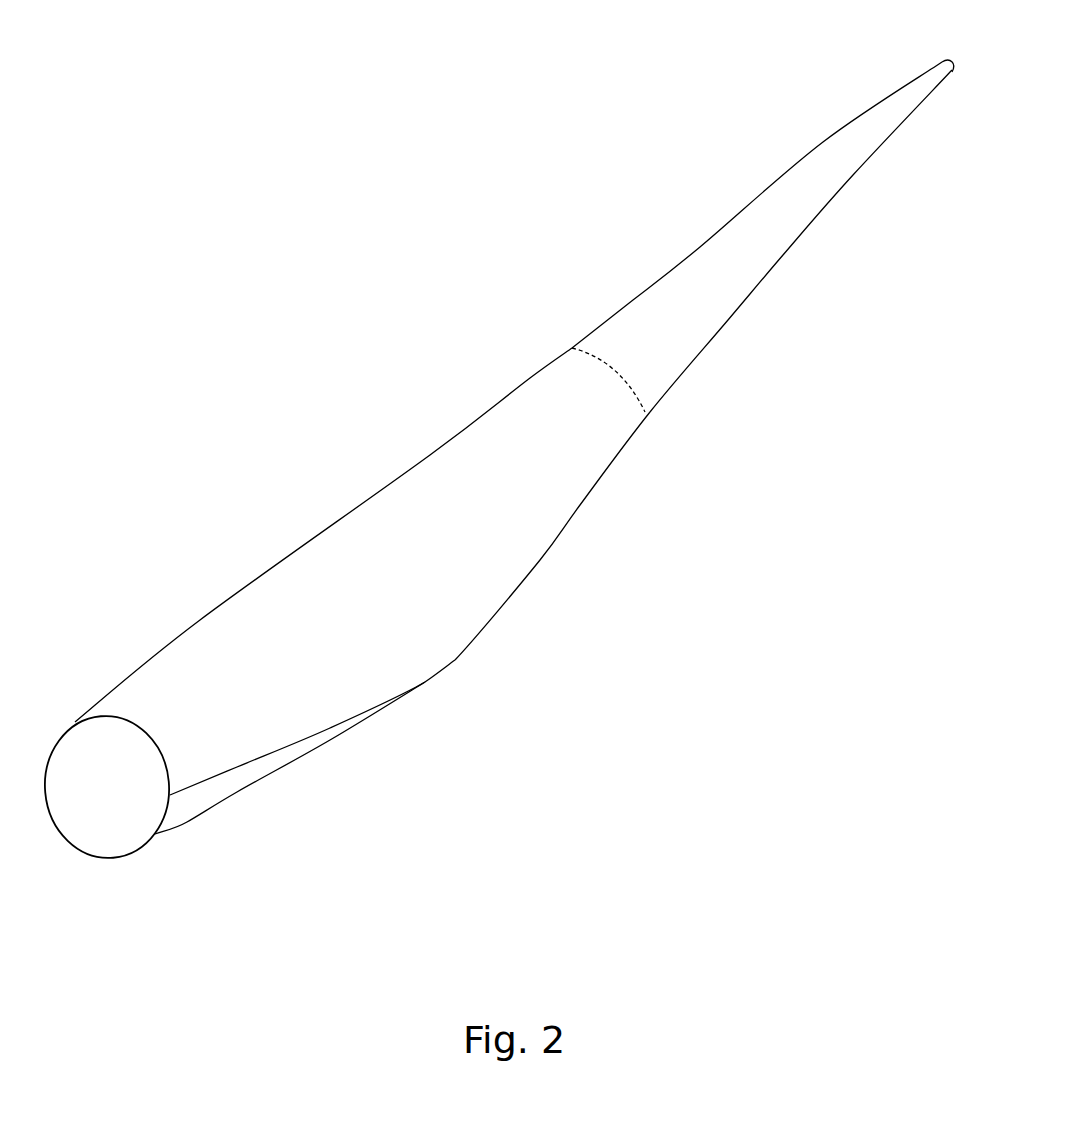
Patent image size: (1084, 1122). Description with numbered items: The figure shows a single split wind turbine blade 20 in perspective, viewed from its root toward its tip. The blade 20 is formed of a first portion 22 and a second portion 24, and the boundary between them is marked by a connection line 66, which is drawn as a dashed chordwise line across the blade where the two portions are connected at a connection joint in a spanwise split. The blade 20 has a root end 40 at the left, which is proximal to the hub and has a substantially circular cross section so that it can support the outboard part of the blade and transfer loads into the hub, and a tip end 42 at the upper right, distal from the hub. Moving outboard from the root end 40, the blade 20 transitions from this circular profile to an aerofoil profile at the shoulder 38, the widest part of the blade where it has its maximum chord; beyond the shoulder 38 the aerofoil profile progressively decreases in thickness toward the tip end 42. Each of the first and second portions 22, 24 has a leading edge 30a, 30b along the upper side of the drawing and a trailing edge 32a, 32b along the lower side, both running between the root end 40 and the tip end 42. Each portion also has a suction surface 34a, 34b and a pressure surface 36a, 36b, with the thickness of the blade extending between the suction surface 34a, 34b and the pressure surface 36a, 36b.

The wind turbine blade 20 is at (285, 160).
The first portion 22 is at (221, 637).
The second portion 24 is at (749, 221).
The leading edge 30a is at (427, 453).
The leading edge 30b is at (823, 142).
The trailing edge 32a is at (580, 505).
The trailing edge 32b is at (783, 255).
The suction surface 34a is at (263, 762).
The suction surface 34b is at (853, 175).
The pressure surface 36a is at (388, 612).
The pressure surface 36b is at (723, 309).
The shoulder 38 is at (455, 660).
The root end 40 is at (185, 799).
The tip end 42 is at (942, 62).
The connection line 66 is at (602, 362).